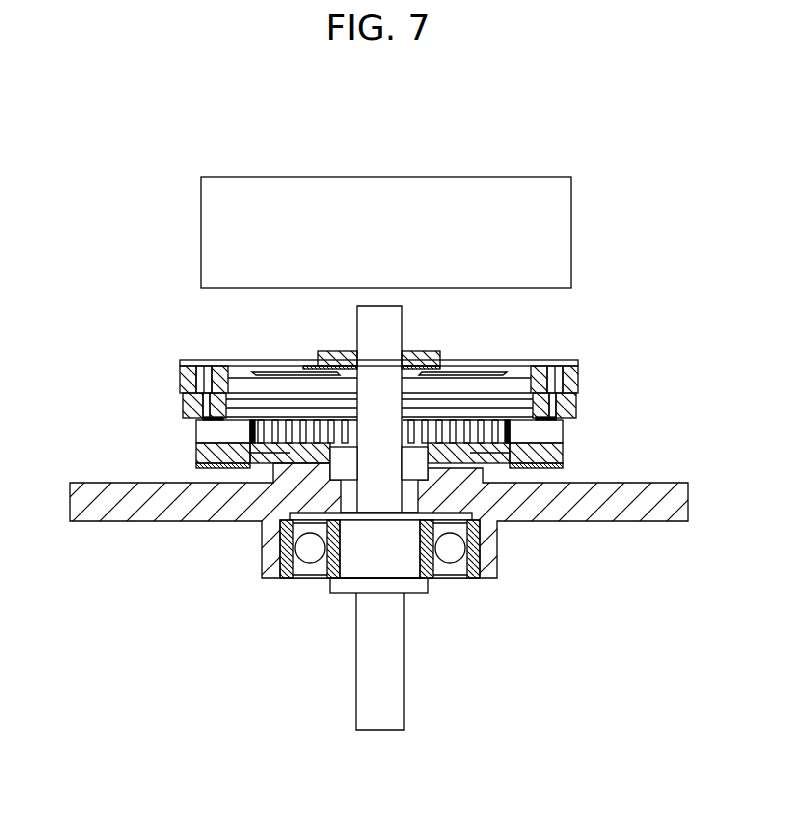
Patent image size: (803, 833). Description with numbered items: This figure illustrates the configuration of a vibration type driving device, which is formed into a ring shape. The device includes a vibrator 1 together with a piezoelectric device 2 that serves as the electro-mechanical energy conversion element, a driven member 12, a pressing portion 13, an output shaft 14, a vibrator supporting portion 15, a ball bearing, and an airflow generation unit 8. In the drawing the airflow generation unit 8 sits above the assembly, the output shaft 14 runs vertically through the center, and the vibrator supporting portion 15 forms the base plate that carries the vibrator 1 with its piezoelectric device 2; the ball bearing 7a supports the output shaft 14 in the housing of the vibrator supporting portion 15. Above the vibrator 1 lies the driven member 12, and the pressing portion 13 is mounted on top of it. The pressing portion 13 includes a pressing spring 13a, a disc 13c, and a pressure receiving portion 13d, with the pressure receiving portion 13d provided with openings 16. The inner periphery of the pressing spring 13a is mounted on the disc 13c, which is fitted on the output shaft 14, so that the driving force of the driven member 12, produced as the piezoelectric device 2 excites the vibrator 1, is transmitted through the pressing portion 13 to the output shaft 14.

The airflow generation unit 8 is at (494, 187).
The output shaft 14 is at (375, 320).
The openings 16 is at (561, 364).
The pressing portion 13 is at (85, 285).
The disc 13c is at (335, 355).
The pressing spring 13a is at (268, 360).
The pressure receiving portion 13d is at (182, 378).
The driven member 12 is at (576, 408).
The vibrator 1 is at (553, 452).
The piezoelectric device 2 is at (553, 468).
The vibrator supporting portion 15 is at (143, 510).
The bearing 7a is at (449, 552).